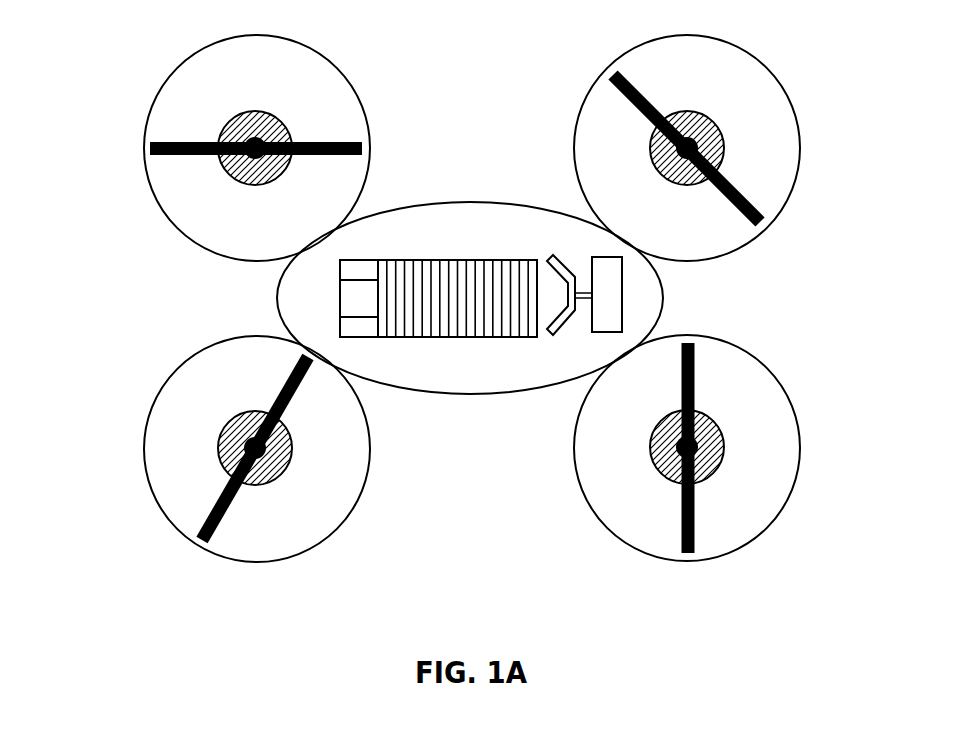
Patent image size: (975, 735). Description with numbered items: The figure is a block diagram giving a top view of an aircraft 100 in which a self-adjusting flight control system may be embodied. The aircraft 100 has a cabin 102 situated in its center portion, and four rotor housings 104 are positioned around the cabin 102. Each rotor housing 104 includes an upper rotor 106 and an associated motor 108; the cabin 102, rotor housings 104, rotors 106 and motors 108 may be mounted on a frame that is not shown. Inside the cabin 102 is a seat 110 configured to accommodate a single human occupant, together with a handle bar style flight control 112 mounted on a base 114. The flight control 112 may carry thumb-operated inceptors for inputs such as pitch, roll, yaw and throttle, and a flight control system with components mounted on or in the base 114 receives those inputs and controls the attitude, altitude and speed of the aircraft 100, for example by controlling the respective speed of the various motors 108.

The aircraft 100 is at (108, 50).
The cabin 102 is at (467, 202).
The rotor housing 104 is at (145, 170).
The upper rotor 106 is at (205, 141).
The motor 108 is at (262, 112).
The seat 110 is at (468, 260).
The flight control 112 is at (560, 335).
The base 114 is at (598, 256).